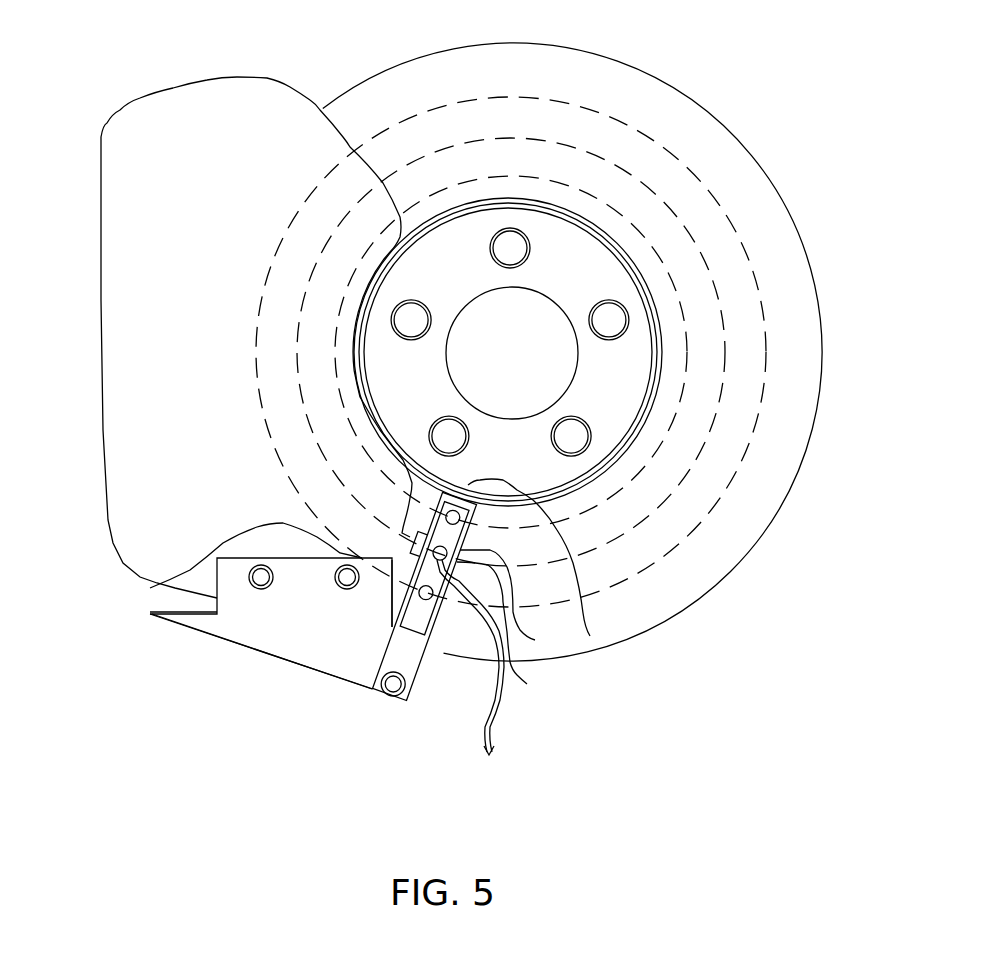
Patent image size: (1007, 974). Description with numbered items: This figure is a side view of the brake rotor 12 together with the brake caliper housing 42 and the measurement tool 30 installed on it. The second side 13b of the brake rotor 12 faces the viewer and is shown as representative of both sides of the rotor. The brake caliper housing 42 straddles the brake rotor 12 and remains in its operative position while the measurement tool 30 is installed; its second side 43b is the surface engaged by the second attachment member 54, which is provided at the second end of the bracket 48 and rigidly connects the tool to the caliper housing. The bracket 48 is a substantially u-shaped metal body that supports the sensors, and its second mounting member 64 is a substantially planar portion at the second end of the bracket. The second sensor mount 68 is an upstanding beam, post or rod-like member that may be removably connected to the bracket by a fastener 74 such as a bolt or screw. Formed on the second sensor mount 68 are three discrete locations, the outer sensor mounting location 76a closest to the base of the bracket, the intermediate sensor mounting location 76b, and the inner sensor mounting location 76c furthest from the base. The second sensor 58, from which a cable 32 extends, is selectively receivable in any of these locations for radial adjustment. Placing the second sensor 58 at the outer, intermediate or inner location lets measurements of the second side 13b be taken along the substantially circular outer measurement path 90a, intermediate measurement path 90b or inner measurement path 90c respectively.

The brake rotor 12 is at (575, 339).
The second side of the brake rotor 13b is at (740, 140).
The brake caliper housing 42 is at (102, 190).
The second side of the brake caliper housing 43b is at (116, 262).
The second attachment member 54 is at (250, 576).
The bracket 48 is at (205, 637).
The second mounting member 64 is at (297, 655).
The measurement tool 30 is at (217, 683).
The fastener 74 is at (397, 705).
The second sensor mount 68 is at (375, 700).
The outer sensor mounting location 76a is at (440, 603).
The intermediate sensor mounting location 76b is at (527, 684).
The inner sensor mounting location 76c is at (590, 636).
The second sensor 58 is at (535, 640).
The sensor cable 32 is at (500, 713).
The outer measurement path 90a is at (698, 522).
The intermediate measurement path 90b is at (688, 478).
The inner measurement path 90c is at (675, 422).